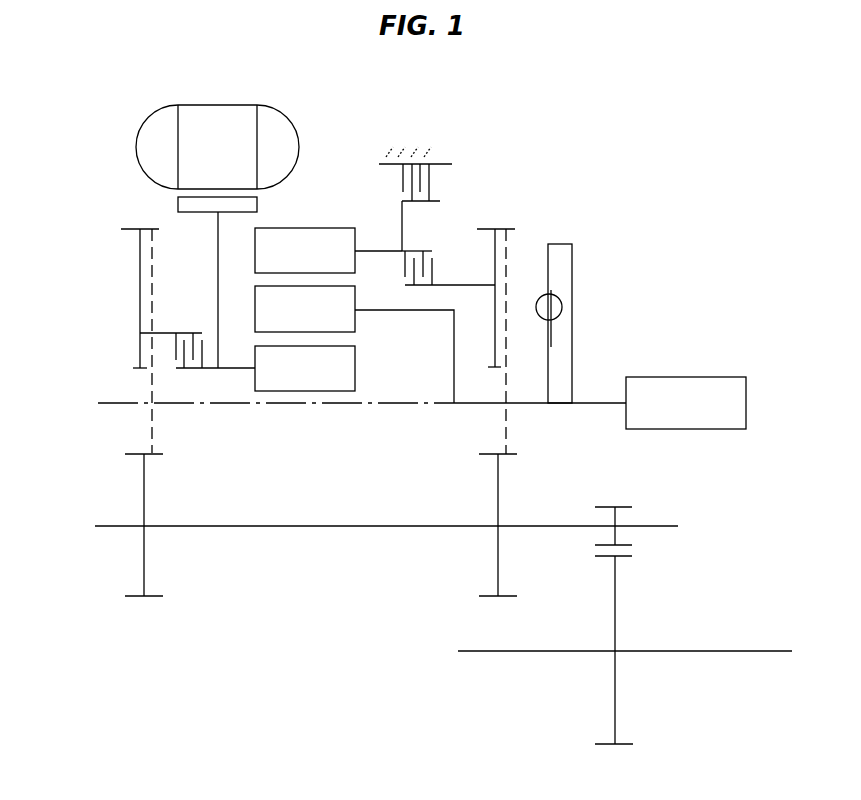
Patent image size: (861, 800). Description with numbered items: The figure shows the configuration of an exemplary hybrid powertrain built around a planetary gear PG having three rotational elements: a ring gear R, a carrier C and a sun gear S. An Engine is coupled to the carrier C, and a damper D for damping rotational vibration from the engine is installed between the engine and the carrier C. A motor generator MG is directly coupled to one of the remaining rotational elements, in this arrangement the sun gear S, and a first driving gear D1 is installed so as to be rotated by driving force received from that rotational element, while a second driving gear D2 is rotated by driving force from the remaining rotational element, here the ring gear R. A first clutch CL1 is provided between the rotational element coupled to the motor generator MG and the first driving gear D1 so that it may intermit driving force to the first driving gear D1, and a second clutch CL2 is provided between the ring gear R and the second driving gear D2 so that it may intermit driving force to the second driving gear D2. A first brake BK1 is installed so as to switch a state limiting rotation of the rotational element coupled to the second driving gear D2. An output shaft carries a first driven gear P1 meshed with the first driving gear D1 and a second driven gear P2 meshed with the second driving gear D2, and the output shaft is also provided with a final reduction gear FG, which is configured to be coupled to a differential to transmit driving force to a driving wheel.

The motor generator MG is at (217, 236).
The first driving gear D1 is at (131, 229).
The first clutch CL1 is at (163, 333).
The planetary gear PG is at (307, 240).
The ring gear R is at (305, 250).
The carrier C is at (305, 309).
The sun gear S is at (305, 368).
The first brake BK1 is at (444, 180).
The second clutch CL2 is at (427, 250).
The second driving gear D2 is at (506, 229).
The damper D is at (562, 306).
The engine Engine is at (686, 403).
The first driven gear P1 is at (152, 598).
The second driven gear P2 is at (490, 597).
The final reduction gear FG is at (633, 544).